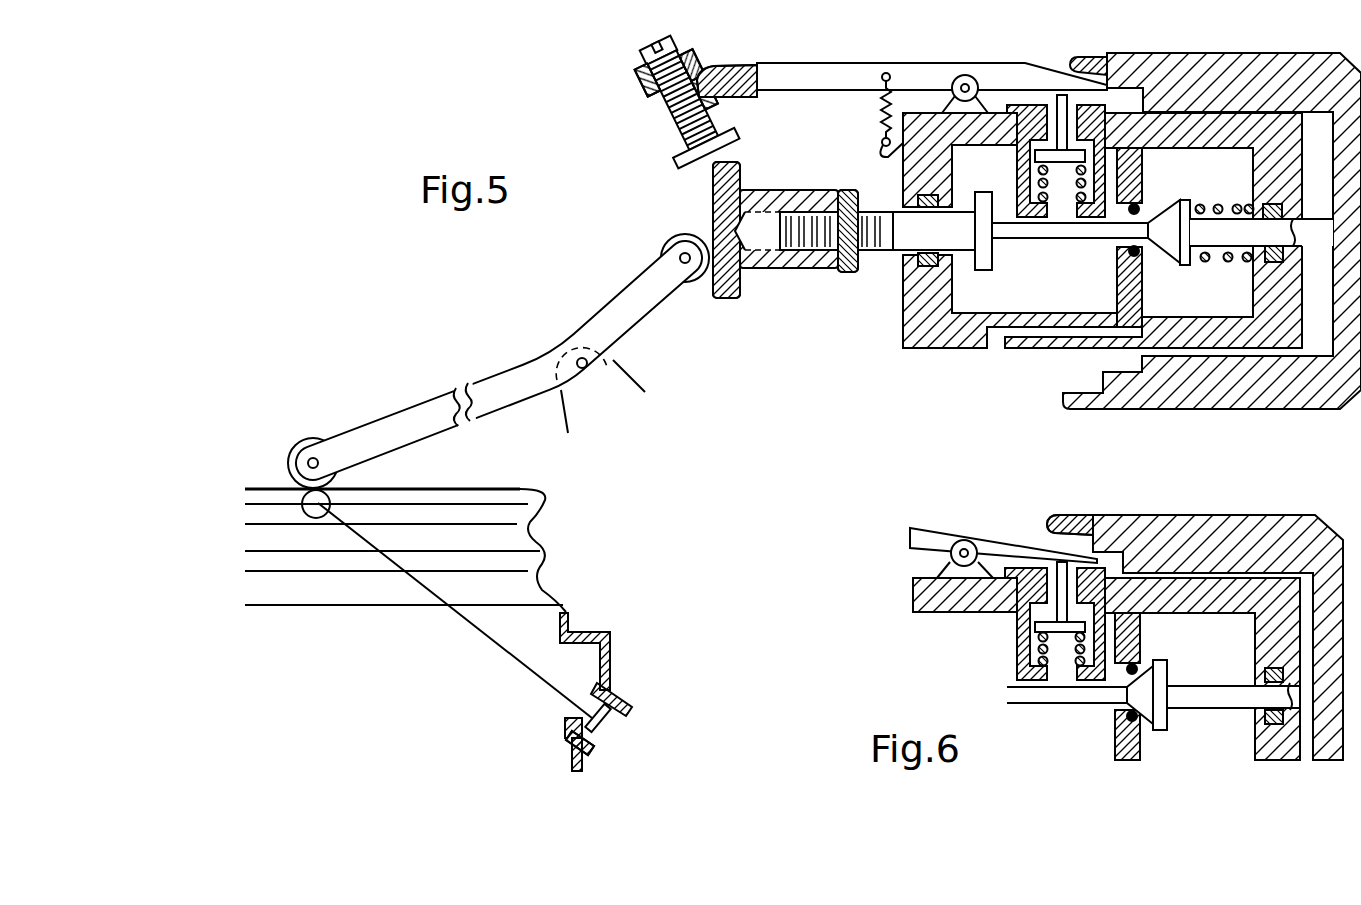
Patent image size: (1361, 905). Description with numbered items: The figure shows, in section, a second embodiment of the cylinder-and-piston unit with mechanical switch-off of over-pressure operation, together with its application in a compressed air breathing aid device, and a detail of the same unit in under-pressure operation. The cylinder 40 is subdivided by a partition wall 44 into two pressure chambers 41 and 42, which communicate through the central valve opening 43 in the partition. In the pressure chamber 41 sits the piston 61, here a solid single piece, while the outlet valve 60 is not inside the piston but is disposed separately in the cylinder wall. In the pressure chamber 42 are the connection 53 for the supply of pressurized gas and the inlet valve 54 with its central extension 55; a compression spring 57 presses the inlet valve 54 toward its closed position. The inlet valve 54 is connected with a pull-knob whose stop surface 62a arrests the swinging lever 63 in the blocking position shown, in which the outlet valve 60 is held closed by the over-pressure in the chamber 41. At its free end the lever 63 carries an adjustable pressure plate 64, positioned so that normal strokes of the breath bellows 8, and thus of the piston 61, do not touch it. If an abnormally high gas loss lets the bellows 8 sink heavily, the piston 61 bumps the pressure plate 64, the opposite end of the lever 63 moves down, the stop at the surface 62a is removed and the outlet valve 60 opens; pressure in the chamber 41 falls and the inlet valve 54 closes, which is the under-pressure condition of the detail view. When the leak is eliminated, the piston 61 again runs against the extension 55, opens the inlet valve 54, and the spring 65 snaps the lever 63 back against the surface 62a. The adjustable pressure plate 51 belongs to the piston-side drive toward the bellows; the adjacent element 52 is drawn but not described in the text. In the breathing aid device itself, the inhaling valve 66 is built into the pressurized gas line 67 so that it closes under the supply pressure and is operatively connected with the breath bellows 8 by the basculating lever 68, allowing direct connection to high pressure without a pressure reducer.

In FIG. 5, the breath bellows 8 is at (523, 543).
In FIG. 5, the cylinder 40 is at (910, 174).
In FIG. 5, the pressure chamber 41 is at (1012, 305).
In FIG. 5, the pressure chamber 42 is at (1214, 305).
In FIG. 5, the central valve opening 43 is at (1116, 244).
In FIG. 6, the central valve opening 43 is at (1113, 708).
In FIG. 5, the partition wall 44 is at (1060, 277).
In FIG. 5, the adjustable pressure plate 51 is at (715, 204).
In FIG. 5, the arm 52 is at (428, 407).
In FIG. 5, the connection 53 is at (997, 342).
In FIG. 5, the inlet valve 54 is at (1162, 208).
In FIG. 6, the inlet valve 54 is at (1149, 667).
In FIG. 5, the extension 55 is at (1060, 235).
In FIG. 5, the compression spring 57 is at (1245, 206).
In FIG. 5, the outlet valve 60 is at (1038, 123).
In FIG. 6, the outlet valve 60 is at (1033, 617).
In FIG. 5, the piston 61 is at (896, 243).
In FIG. 5, the stop surface 62a is at (1070, 66).
In FIG. 6, the stop surface 62a is at (1048, 530).
In FIG. 5, the swinging lever 63 is at (802, 82).
In FIG. 6, the swinging lever 63 is at (1016, 536).
In FIG. 5, the pressure plate 64 is at (683, 163).
In FIG. 5, the spring 65 is at (880, 111).
In FIG. 5, the inhaling valve 66 is at (606, 729).
In FIG. 5, the pressurized gas line 67 is at (564, 734).
In FIG. 5, the basculating lever 68 is at (469, 624).